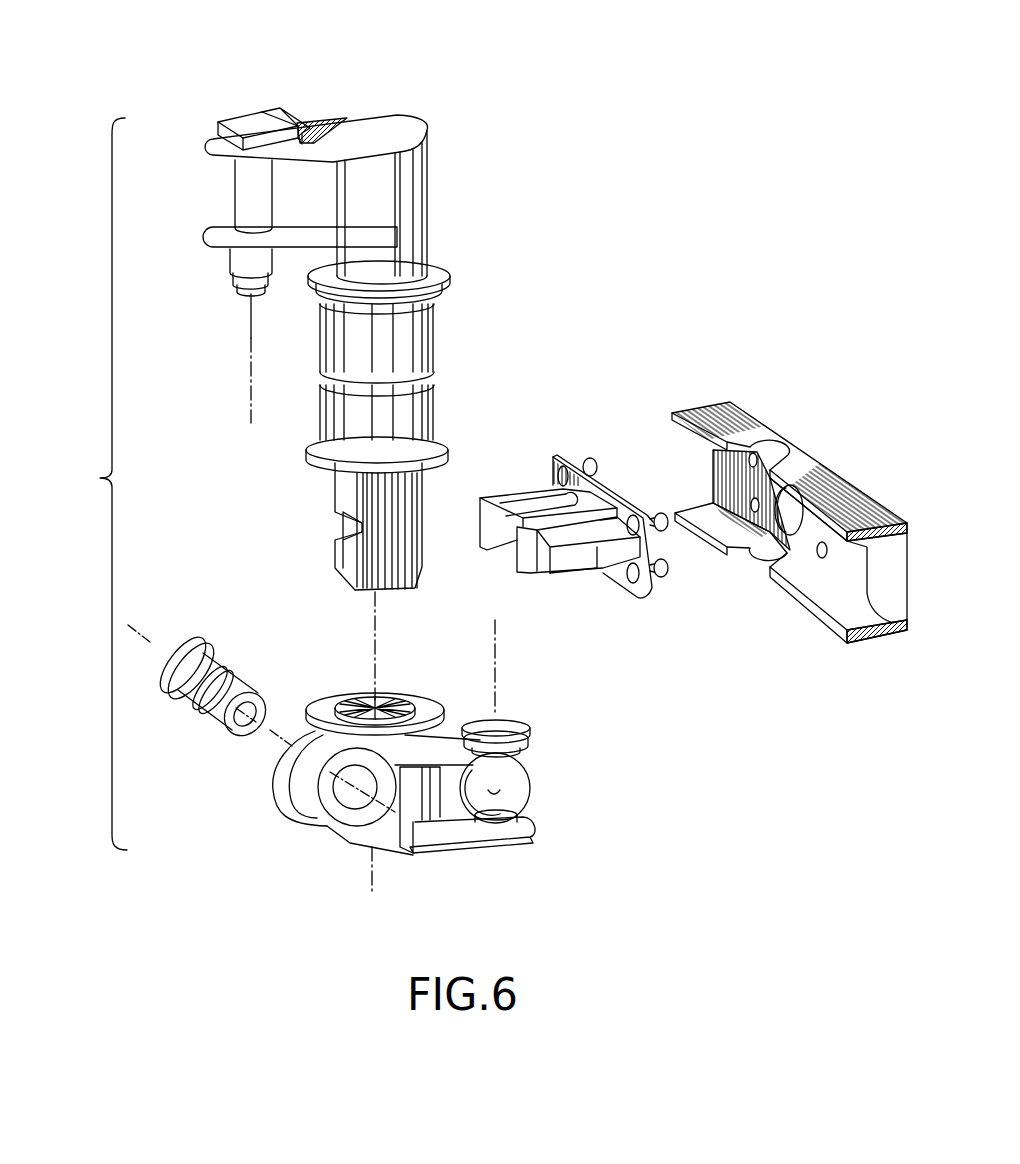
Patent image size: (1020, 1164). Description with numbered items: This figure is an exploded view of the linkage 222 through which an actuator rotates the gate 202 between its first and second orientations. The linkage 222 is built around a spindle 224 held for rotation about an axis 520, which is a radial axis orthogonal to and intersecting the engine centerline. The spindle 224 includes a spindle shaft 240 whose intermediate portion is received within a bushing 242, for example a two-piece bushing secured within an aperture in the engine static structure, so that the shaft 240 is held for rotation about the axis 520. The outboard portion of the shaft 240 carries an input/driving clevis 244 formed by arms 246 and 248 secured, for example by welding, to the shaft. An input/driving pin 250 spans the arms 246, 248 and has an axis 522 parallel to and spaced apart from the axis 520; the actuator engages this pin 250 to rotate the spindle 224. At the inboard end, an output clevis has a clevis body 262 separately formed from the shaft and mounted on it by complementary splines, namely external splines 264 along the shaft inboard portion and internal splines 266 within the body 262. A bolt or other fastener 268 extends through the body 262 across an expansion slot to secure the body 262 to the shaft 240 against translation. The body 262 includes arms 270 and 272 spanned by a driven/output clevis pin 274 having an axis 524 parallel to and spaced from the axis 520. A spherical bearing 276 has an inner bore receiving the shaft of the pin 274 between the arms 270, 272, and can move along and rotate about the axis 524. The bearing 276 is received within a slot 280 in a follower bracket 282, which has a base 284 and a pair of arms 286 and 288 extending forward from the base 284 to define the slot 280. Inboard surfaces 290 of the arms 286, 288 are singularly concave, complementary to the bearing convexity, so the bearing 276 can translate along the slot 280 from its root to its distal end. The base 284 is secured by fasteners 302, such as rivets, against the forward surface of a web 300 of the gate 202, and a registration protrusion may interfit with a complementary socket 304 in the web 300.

The gate 202 is at (793, 622).
The linkage 222 is at (86, 484).
The spindle 224 is at (442, 113).
The spindle shaft 240 is at (428, 204).
The bushing 242 is at (462, 338).
The input/driving clevis 244 is at (305, 233).
The arm 246 is at (326, 118).
The arm 248 is at (212, 238).
The input/driving pin 250 is at (245, 203).
The clevis body 262 is at (372, 772).
The external splines 264 is at (423, 570).
The internal splines 266 is at (338, 702).
The fastener 268 is at (186, 722).
The arm 270 is at (536, 838).
The arm 272 is at (531, 741).
The driven/output clevis pin 274 is at (490, 720).
The spherical bearing 276 is at (531, 788).
The slot 280 is at (535, 497).
The follower bracket 282 is at (604, 460).
The base 284 is at (662, 578).
The arm 286 is at (486, 500).
The arm 288 is at (560, 568).
The inboard surfaces 290 is at (497, 540).
The web 300 is at (857, 578).
The fasteners 302 is at (630, 485).
The socket 304 is at (785, 516).
The axis 520 is at (374, 612).
The axis 522 is at (251, 338).
The axis 524 is at (496, 650).